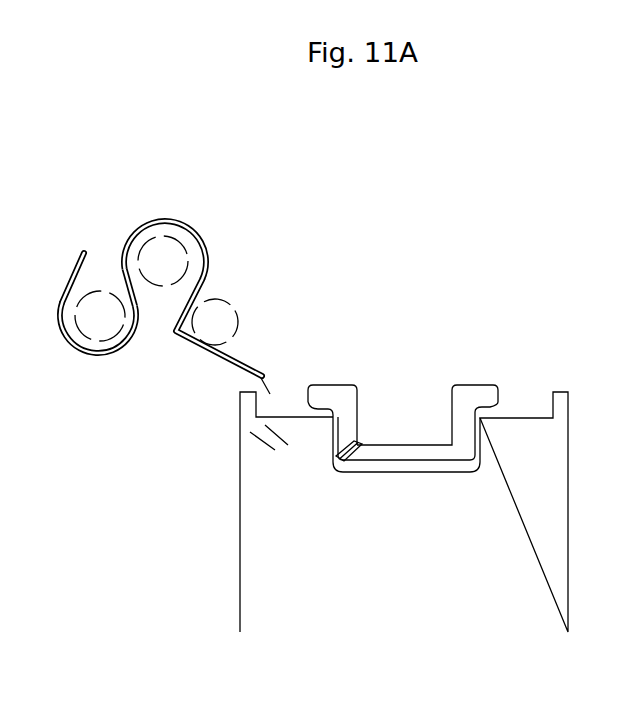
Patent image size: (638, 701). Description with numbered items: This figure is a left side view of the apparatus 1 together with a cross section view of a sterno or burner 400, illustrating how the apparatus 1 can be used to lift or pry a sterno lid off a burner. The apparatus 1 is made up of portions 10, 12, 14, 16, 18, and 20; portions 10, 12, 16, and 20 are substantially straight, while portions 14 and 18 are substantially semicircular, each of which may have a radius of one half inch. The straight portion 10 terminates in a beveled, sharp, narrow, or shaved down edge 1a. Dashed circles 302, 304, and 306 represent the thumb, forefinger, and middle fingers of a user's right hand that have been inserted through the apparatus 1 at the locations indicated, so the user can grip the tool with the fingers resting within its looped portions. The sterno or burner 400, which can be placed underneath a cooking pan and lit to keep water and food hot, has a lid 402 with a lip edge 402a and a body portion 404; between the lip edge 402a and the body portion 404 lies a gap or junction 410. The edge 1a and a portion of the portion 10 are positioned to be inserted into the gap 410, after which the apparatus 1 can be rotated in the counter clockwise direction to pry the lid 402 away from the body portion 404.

The apparatus 1 is at (169, 305).
The edge 1a is at (317, 410).
The portion 10 is at (220, 363).
The portion 12 is at (245, 315).
The portion 14 is at (180, 221).
The portion 16 is at (138, 312).
The portion 18 is at (108, 353).
The portion 20 is at (67, 285).
The dashed circle 302 is at (243, 330).
The dashed circle 304 is at (177, 253).
The dashed circle 306 is at (100, 293).
The sterno or burner 400 is at (375, 470).
The lid 402 is at (403, 395).
The lip edge 402a is at (323, 398).
The body portion 404 is at (268, 539).
The gap or junction 410 is at (326, 414).